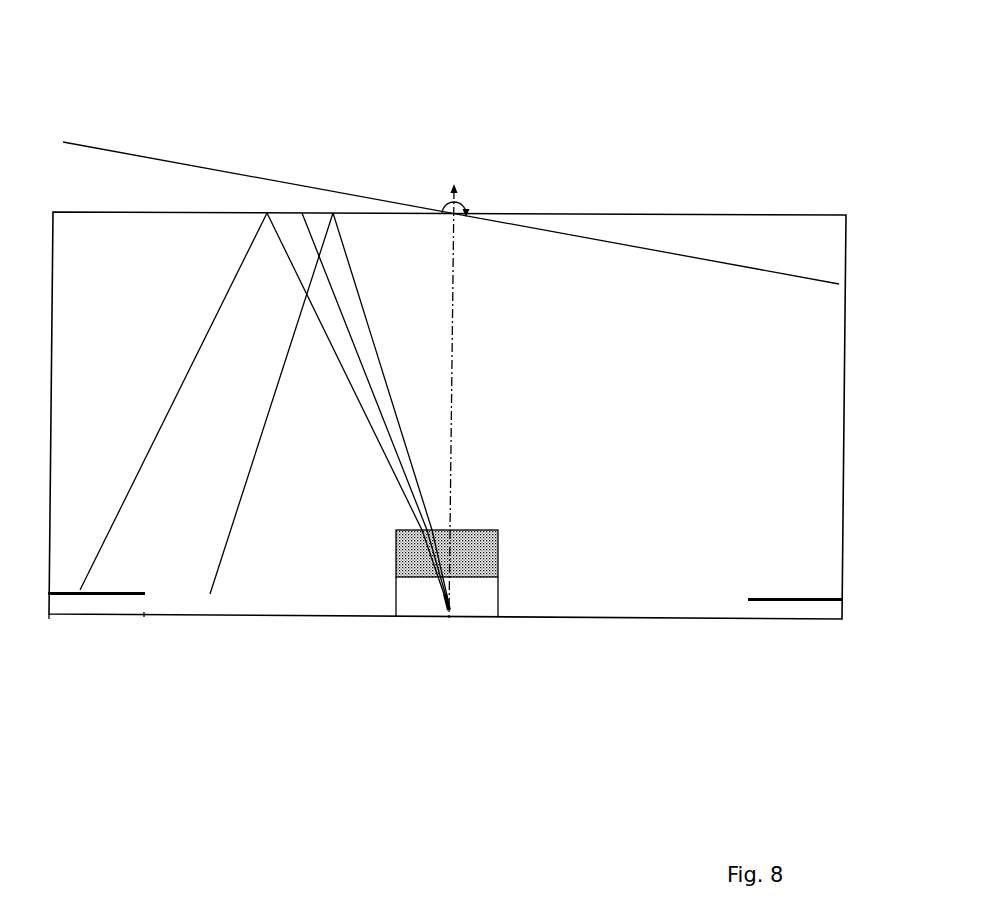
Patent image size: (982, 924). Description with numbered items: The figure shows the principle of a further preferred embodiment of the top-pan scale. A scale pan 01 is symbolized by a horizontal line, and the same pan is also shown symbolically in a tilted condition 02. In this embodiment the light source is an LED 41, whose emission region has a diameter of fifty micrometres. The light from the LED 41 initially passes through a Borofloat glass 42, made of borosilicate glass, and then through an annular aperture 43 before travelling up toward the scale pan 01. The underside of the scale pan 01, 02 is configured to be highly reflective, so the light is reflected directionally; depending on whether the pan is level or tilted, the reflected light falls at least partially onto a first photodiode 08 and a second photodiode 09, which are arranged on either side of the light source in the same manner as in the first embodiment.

The scale pan 01 is at (699, 214).
The tilted condition 02 is at (143, 157).
The first photodiode 08 is at (113, 595).
The second photodiode 09 is at (808, 601).
The LED 41 is at (447, 600).
The Borofloat glass 42 is at (498, 565).
The annular aperture 43 is at (417, 530).